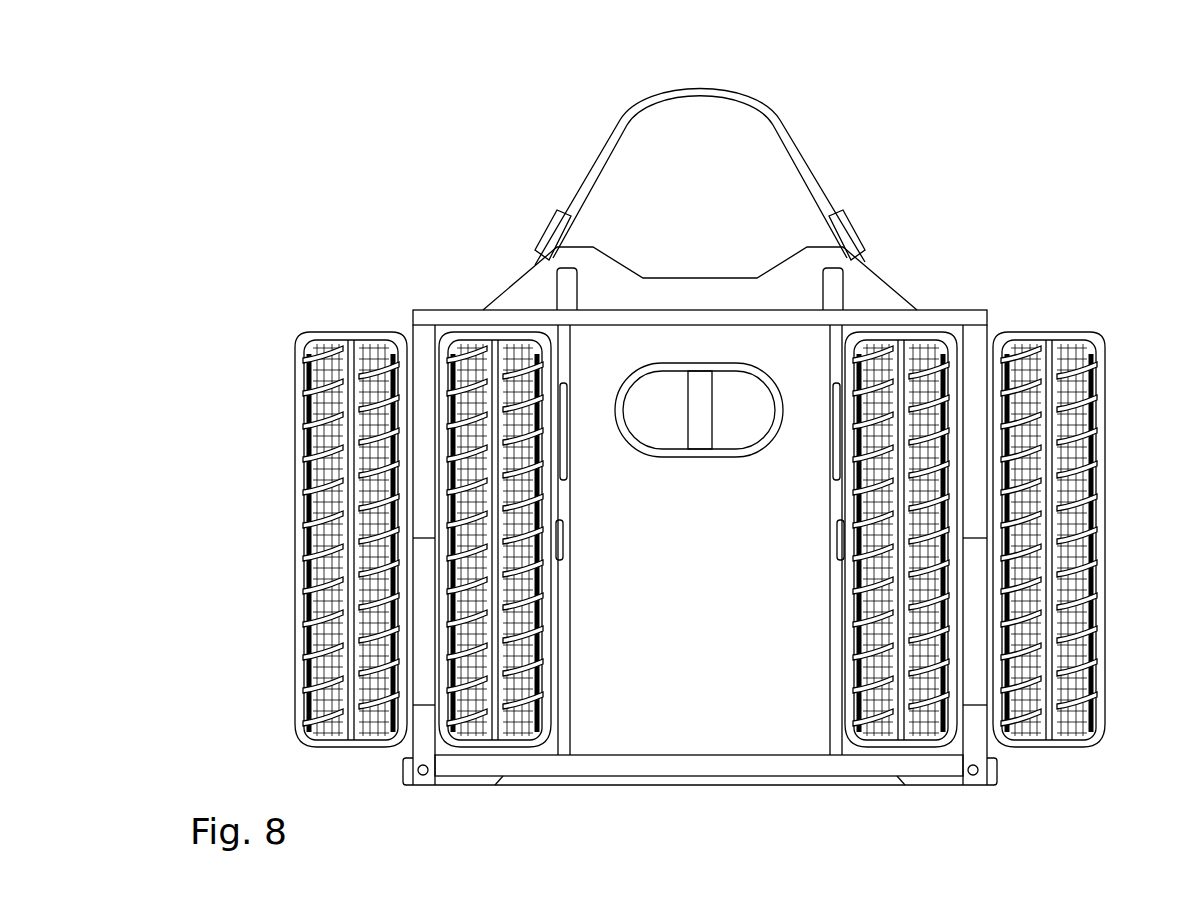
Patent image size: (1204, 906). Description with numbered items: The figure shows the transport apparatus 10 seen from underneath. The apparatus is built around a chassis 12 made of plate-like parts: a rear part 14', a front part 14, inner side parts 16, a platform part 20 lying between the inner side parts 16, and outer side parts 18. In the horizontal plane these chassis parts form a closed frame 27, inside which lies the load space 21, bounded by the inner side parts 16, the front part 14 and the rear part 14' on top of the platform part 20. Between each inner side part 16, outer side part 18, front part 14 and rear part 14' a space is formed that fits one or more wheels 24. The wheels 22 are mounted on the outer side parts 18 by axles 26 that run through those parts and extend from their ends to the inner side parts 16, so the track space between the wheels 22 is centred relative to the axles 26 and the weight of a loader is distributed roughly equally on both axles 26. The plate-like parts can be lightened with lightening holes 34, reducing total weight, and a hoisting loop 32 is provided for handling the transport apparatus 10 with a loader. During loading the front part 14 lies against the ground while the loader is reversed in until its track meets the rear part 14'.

The transport apparatus 10 is at (1017, 122).
The chassis 12 is at (915, 252).
The front part 14 is at (699, 807).
The rear part 14' is at (700, 255).
The inner side parts 16 is at (568, 718).
The outer side parts 18 is at (423, 738).
The platform part 20 is at (710, 637).
The load space 21 is at (675, 668).
The wheels 22 is at (280, 464).
The wheels 24 is at (380, 330).
The axles 26 is at (563, 535).
The closed frame 27 is at (394, 267).
The hoisting loop 32 is at (770, 112).
The lightening holes 34 is at (727, 457).